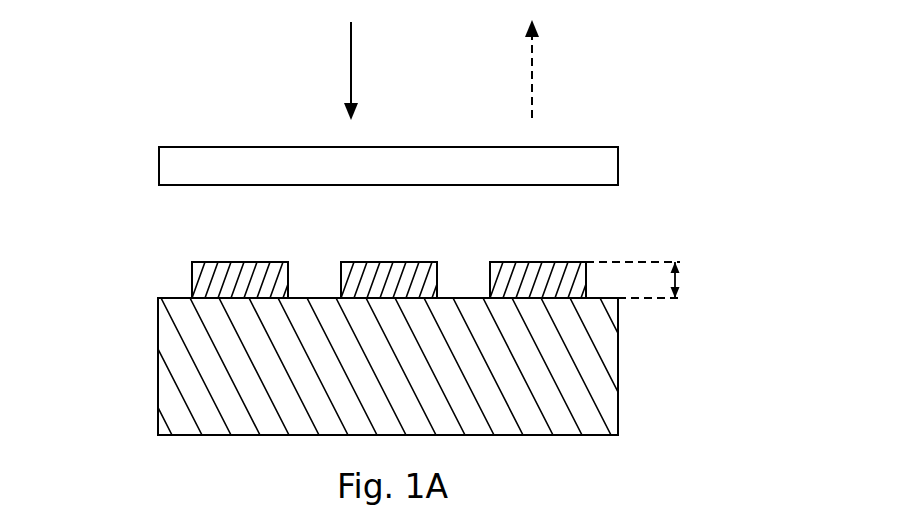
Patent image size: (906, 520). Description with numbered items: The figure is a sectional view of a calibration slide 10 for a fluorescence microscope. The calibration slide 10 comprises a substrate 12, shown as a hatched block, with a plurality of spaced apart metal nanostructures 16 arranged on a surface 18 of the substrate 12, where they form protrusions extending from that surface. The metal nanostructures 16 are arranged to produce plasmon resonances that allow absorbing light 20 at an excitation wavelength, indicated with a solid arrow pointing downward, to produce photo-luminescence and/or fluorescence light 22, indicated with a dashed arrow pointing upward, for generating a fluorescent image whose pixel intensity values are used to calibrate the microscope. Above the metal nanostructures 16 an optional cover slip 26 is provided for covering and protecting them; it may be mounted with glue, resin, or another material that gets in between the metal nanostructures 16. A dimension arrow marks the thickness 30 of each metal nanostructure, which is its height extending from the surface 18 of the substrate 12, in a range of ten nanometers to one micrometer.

The calibration slide 10 is at (718, 155).
The substrate 12 is at (618, 375).
The metal nanostructures 16 is at (228, 262).
The surface 18 is at (172, 298).
The light 20 is at (351, 67).
The photo-luminescence and/or fluorescence light 22 is at (532, 67).
The cover slip 26 is at (159, 162).
The thickness 30 is at (675, 282).